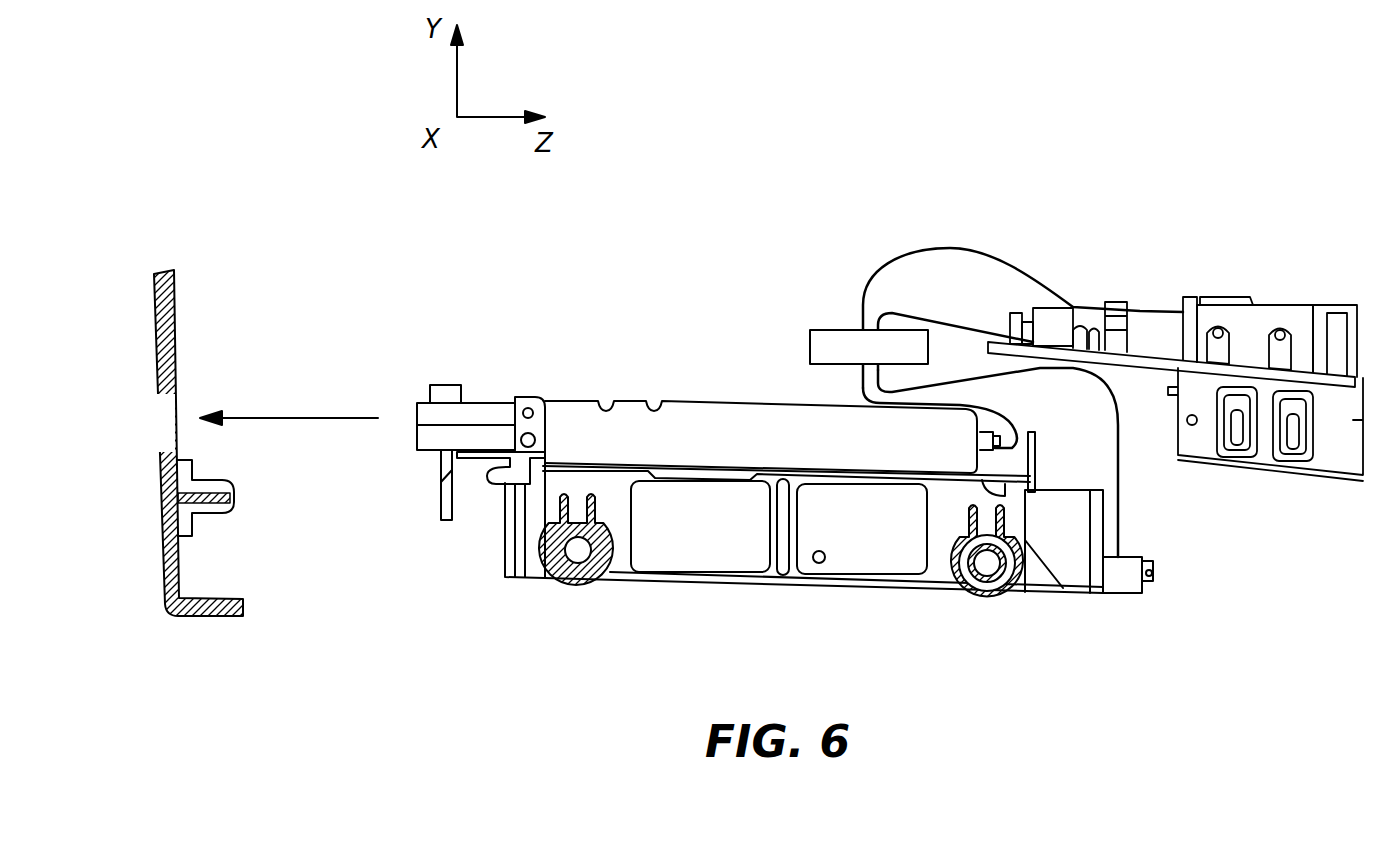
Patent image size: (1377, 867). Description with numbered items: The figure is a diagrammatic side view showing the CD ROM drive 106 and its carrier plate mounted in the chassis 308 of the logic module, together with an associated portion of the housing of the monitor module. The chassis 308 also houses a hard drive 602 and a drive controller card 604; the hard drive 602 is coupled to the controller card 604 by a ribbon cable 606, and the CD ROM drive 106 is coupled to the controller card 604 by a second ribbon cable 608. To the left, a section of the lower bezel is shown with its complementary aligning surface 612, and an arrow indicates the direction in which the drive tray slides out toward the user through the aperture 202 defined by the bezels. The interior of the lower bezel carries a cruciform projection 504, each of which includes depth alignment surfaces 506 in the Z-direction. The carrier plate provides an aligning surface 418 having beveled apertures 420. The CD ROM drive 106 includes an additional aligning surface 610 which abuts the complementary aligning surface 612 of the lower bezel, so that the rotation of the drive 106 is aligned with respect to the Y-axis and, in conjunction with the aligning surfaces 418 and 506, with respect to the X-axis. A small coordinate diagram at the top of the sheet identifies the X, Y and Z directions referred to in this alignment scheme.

The CD ROM drive 106 is at (495, 405).
The aperture 202 is at (165, 405).
The chassis 308 is at (497, 568).
The aligning surface 418 is at (445, 478).
The beveled apertures 420 is at (440, 520).
The cruciform projections 504 is at (234, 493).
The depth alignment surfaces 506 is at (185, 470).
The hard drive 602 is at (1073, 581).
The drive controller card 604 is at (1150, 283).
The ribbon cable 606 is at (1125, 513).
The ribbon cable 608 is at (872, 298).
The additional aligning surface 610 is at (430, 388).
The complementary aligning surface 612 is at (175, 330).